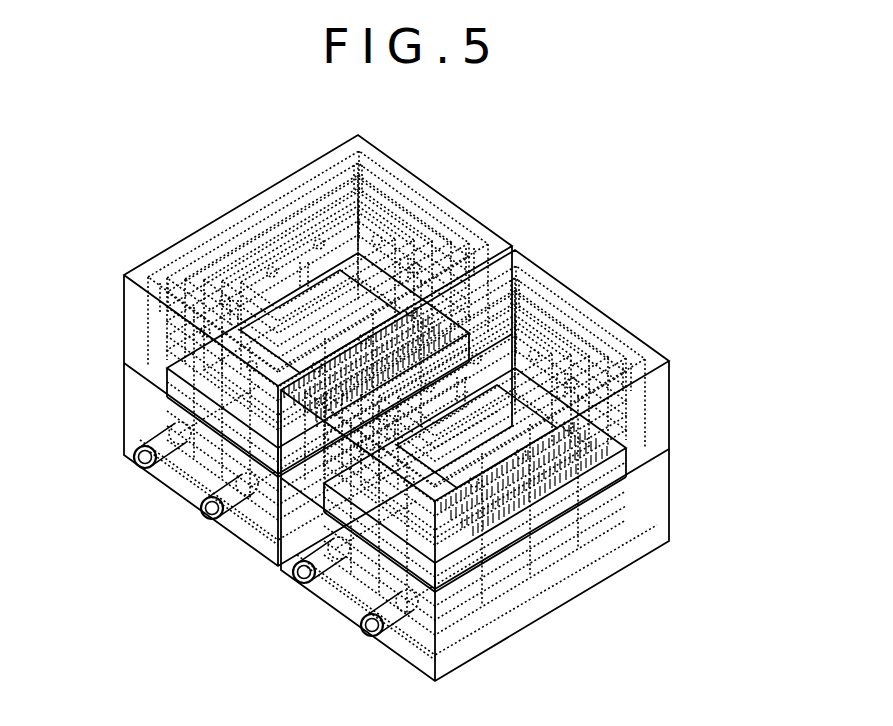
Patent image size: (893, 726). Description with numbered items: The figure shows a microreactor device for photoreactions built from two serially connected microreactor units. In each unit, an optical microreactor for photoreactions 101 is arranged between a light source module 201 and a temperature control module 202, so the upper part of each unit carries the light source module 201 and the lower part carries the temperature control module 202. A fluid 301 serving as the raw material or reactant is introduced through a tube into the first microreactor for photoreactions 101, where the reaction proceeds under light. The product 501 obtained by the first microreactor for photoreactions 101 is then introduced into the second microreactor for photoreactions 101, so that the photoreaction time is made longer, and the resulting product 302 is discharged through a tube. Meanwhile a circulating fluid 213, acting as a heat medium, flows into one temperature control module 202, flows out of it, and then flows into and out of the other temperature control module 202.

The microreactor for photoreactions 101 is at (254, 335).
The light source module 201 is at (120, 280).
The temperature control module 202 is at (120, 372).
The circulating fluid 213 is at (127, 473).
The fluid 301 is at (201, 459).
The product 302 is at (368, 562).
The product 501 is at (450, 180).